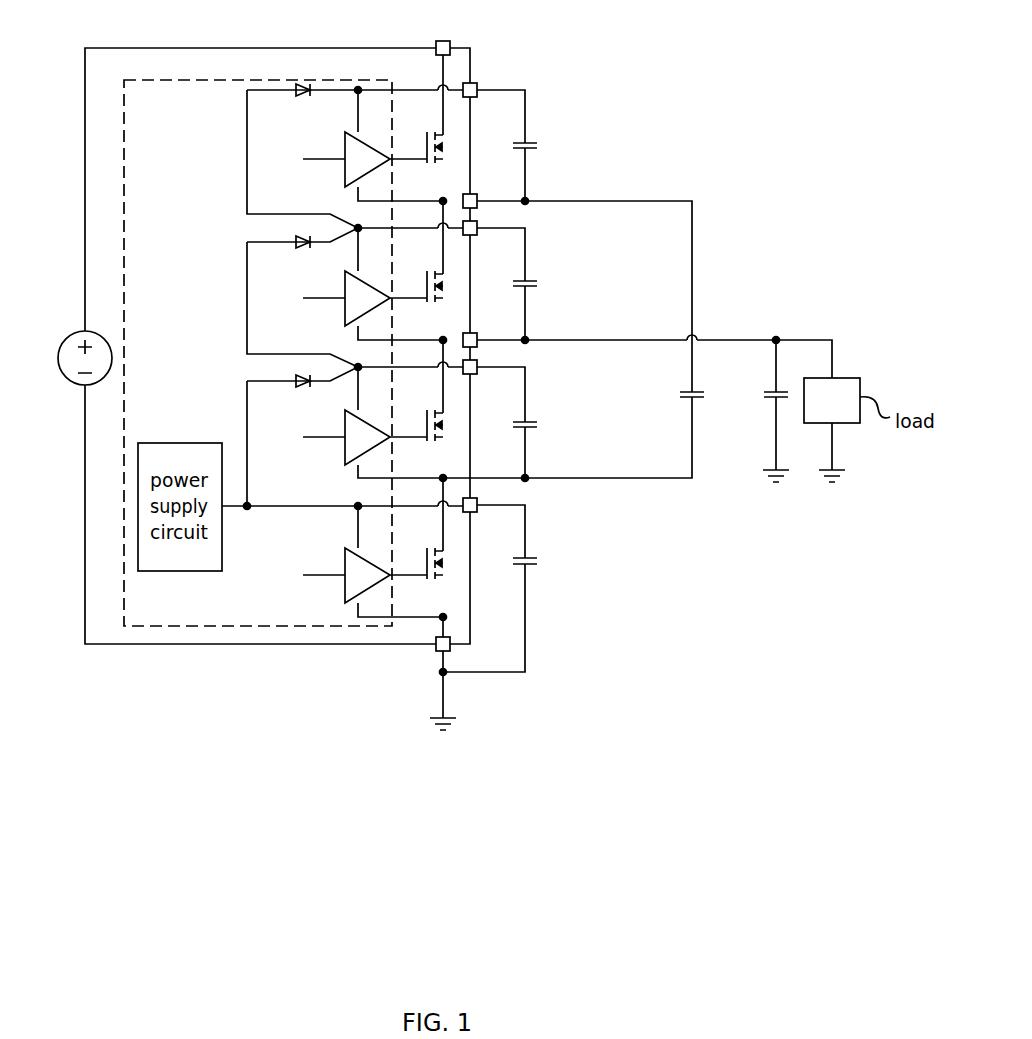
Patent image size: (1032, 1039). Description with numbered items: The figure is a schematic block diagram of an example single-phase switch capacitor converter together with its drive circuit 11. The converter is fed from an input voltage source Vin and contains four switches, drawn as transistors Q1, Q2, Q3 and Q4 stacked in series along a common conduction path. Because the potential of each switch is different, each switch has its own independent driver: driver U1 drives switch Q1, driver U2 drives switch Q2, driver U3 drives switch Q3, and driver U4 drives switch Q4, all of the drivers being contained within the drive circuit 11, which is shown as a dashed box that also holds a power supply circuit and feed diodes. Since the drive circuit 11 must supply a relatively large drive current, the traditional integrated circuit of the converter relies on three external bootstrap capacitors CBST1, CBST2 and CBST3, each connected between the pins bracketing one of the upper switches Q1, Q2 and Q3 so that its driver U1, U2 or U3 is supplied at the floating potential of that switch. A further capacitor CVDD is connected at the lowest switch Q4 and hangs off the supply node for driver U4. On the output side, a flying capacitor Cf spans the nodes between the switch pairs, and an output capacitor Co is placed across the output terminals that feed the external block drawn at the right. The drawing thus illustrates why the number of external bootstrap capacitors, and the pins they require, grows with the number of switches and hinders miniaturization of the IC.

The drive circuit 11 is at (244, 626).
The input voltage source Vin is at (65, 358).
The first driver U1 is at (365, 159).
The second driver U2 is at (365, 298).
The third driver U3 is at (365, 437).
The fourth driver U4 is at (365, 575).
The first switch transistor Q1 is at (416, 142).
The second switch transistor Q2 is at (416, 283).
The third switch transistor Q3 is at (416, 423).
The fourth switch transistor Q4 is at (416, 560).
The bootstrap capacitor CBST1 is at (567, 147).
The bootstrap capacitor CBST2 is at (567, 285).
The bootstrap capacitor CBST3 is at (567, 425).
The supply capacitor CVDD is at (565, 564).
The flying capacitor Cf is at (705, 395).
The output capacitor Co is at (765, 410).